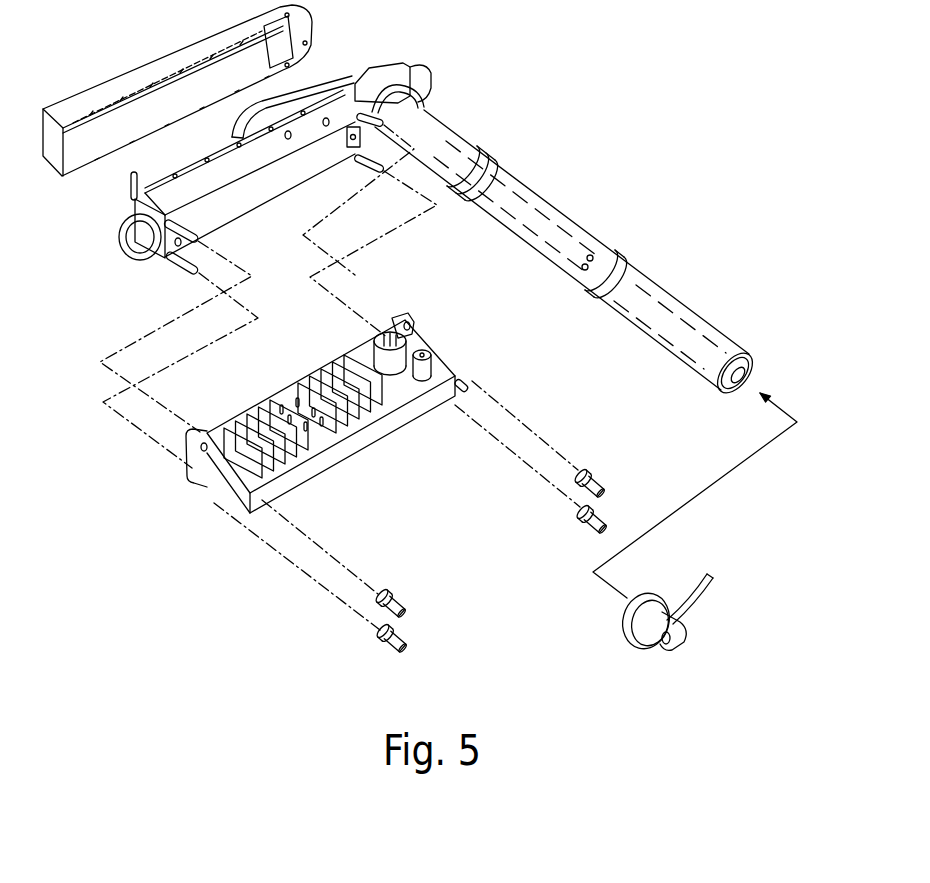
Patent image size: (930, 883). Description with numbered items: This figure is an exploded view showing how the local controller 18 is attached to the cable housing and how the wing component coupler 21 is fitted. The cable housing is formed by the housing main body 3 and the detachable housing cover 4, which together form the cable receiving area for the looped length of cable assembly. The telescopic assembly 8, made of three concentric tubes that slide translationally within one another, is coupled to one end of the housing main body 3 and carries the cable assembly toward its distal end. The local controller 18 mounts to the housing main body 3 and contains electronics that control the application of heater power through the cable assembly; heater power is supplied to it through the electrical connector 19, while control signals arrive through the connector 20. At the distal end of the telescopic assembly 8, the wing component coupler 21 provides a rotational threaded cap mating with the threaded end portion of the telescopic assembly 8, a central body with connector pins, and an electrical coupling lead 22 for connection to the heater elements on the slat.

The housing main body 3 is at (285, 182).
The housing cover 4 is at (162, 54).
The telescopic assembly 8 is at (520, 185).
The local controller 18 is at (367, 443).
The electrical connector 19 is at (381, 330).
The connector 20 is at (423, 341).
The wing component coupler 21 is at (630, 641).
The electrical coupling lead 22 is at (709, 583).